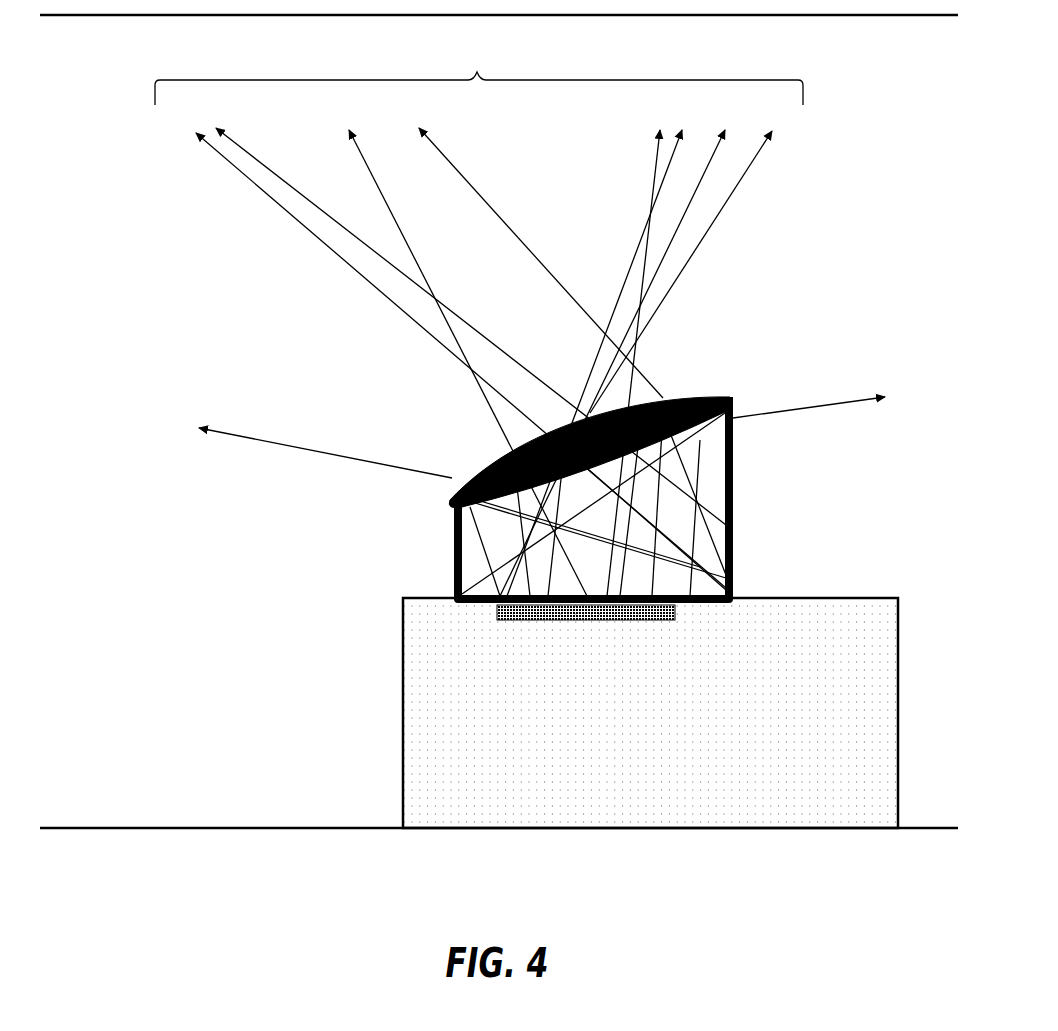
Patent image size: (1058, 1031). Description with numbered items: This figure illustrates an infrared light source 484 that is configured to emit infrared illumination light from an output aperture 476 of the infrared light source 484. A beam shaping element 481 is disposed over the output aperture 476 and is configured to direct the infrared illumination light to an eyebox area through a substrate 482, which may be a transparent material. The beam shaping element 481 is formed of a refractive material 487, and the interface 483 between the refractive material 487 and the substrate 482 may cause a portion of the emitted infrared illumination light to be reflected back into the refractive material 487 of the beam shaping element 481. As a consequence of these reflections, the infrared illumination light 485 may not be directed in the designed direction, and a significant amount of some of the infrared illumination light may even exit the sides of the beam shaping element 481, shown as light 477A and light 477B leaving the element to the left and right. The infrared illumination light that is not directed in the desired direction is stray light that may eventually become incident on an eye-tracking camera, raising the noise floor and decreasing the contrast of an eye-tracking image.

The substrate 482 is at (499, 421).
The infrared light source 484 is at (650, 713).
The output aperture 476 is at (648, 628).
The beam shaping element 481 is at (736, 396).
The interface 483 is at (474, 450).
The refractive material 487 is at (594, 504).
The infrared illumination light 485 is at (479, 316).
The light 477A is at (232, 420).
The light 477B is at (800, 409).